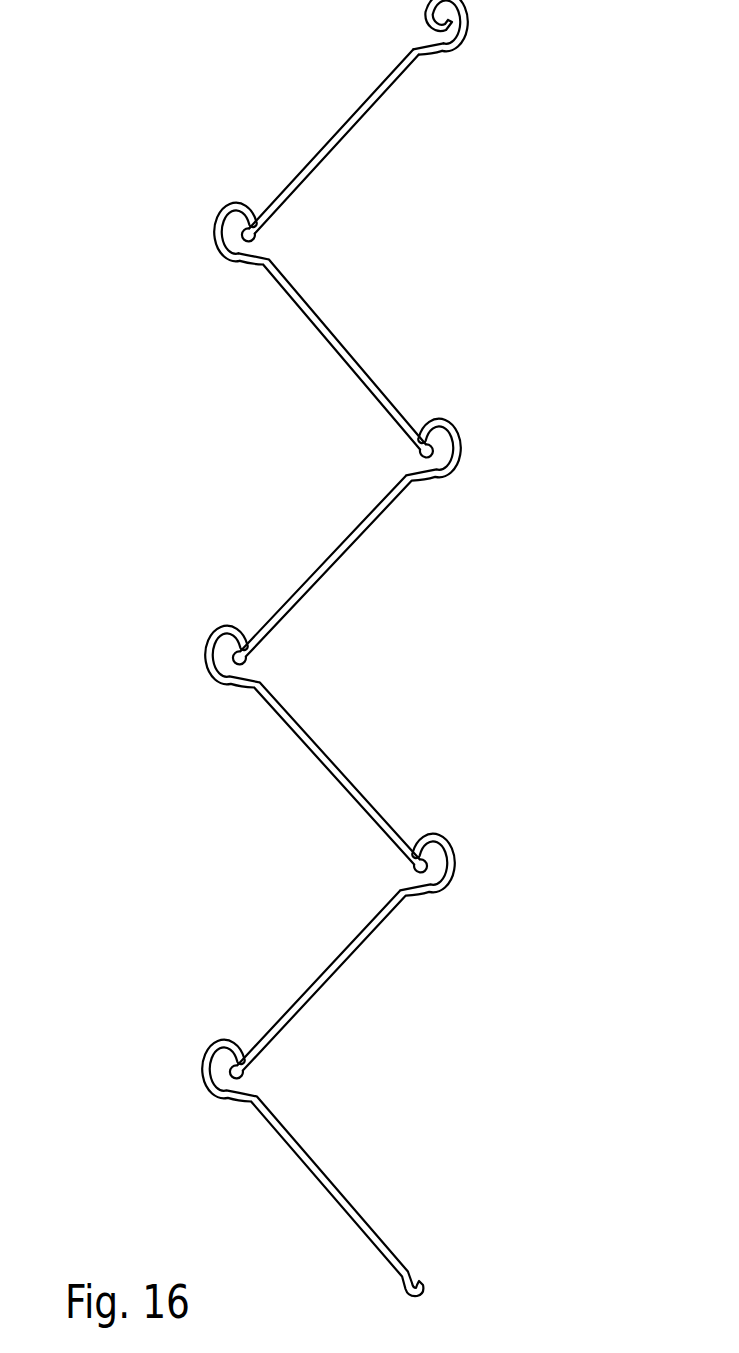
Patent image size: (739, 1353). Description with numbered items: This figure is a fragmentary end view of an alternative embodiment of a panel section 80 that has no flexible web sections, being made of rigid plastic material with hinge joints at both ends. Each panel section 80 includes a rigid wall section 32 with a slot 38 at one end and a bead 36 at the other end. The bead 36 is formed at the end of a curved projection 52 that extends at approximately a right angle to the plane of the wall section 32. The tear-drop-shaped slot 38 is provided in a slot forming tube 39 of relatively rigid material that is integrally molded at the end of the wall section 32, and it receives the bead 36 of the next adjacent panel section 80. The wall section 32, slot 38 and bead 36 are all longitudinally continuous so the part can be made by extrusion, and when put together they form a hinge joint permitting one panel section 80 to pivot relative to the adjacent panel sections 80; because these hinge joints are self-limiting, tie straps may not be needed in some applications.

The panel section 80 is at (351, 648).
The rigid wall section 32 is at (320, 160).
The bead 36 is at (236, 258).
The tear-drop-shaped slot 38 is at (463, 18).
The slot forming tube 39 is at (448, 50).
The curved projection 52 is at (263, 229).